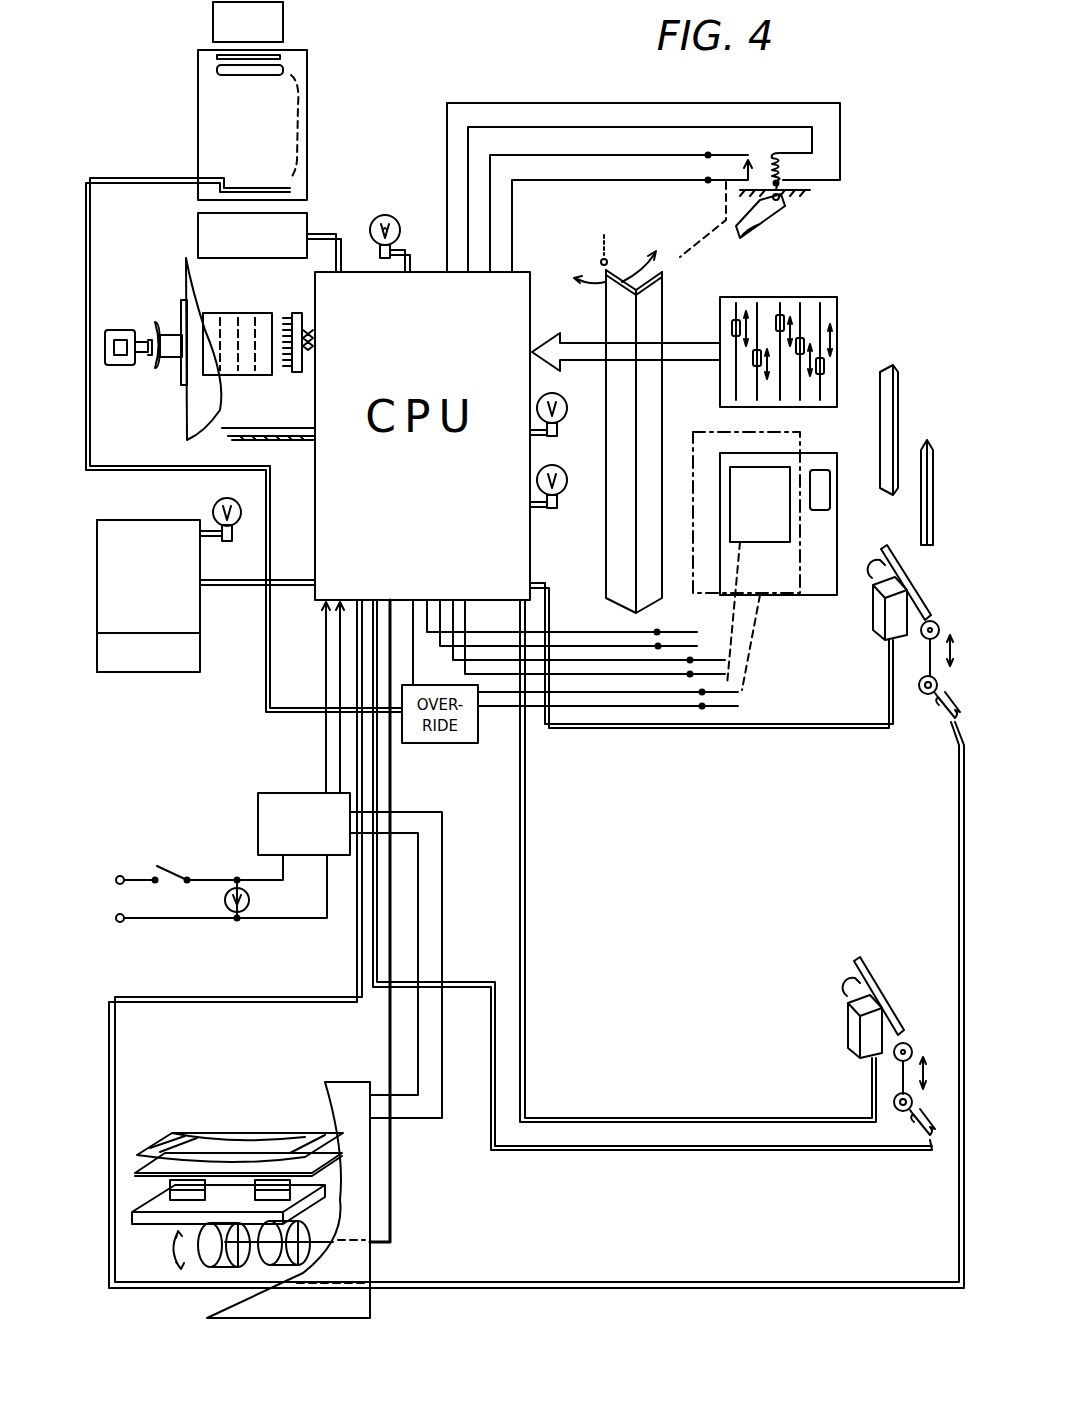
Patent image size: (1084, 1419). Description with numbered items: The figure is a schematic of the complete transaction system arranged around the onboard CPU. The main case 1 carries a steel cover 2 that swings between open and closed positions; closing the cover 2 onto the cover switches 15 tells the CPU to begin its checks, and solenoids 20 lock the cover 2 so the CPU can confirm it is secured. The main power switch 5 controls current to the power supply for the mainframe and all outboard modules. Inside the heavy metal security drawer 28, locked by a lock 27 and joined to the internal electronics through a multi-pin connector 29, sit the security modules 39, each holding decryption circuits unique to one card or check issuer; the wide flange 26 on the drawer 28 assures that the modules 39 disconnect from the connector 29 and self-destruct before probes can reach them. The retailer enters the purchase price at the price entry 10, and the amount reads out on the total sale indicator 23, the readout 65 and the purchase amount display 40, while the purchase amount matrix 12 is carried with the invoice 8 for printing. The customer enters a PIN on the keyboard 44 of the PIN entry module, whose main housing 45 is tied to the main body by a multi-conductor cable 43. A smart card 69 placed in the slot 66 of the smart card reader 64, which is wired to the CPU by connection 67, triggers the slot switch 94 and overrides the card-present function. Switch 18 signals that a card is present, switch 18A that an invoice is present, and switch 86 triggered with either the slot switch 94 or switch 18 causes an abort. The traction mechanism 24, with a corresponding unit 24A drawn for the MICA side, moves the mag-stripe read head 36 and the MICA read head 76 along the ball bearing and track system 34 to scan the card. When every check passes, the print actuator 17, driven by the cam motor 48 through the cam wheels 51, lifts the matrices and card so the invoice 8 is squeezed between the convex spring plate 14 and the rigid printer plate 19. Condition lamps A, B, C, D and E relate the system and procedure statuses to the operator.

The main case 1 is at (186, 268).
The cover 2 is at (766, 218).
The main power switch 5 is at (168, 868).
The invoice 8 is at (837, 553).
The purchase price entry 10 is at (800, 297).
The purchase amount matrix 12 is at (830, 484).
The spring plate 14 is at (235, 1143).
The cover switches 15 is at (718, 152).
The print actuator 17 is at (158, 1217).
The card present switch 18 is at (738, 693).
The invoice present switch 18A is at (697, 634).
The printer plate 19 is at (322, 1166).
The solenoids 20 is at (803, 155).
The total sale indicator 23 is at (300, 214).
The verifier traction mechanism 24 is at (925, 604).
The pulley arm 24A is at (898, 1032).
The wide flange 26 is at (180, 375).
The lock 27 is at (118, 330).
The security drawer 28 is at (228, 365).
The multi-pin connector 29 is at (297, 313).
The ball bearing and track system 34 is at (927, 440).
The mag-stripe reader head 36 is at (893, 585).
The security modules 39 is at (246, 320).
The purchase amount display 40 is at (147, 672).
The multi-conductor cable 43 is at (245, 590).
The keyboard 44 is at (200, 560).
The keyboard main housing 45 is at (97, 565).
The cam motor 48 is at (298, 1250).
The cam wheels 51 is at (186, 1262).
The smart card reader 64 is at (208, 128).
The purchase price readout 65 is at (283, 68).
The smart card slot 66 is at (283, 57).
The line 67 is at (88, 227).
The smart card 69 is at (213, 16).
The MICA read head 76 is at (867, 1003).
The switch 86 is at (725, 661).
The slot switch 94 is at (290, 180).
The condition lamp A is at (225, 900).
The condition lamp B is at (400, 228).
The condition lamp C is at (244, 502).
The condition lamp D is at (563, 403).
The condition lamp E is at (562, 478).